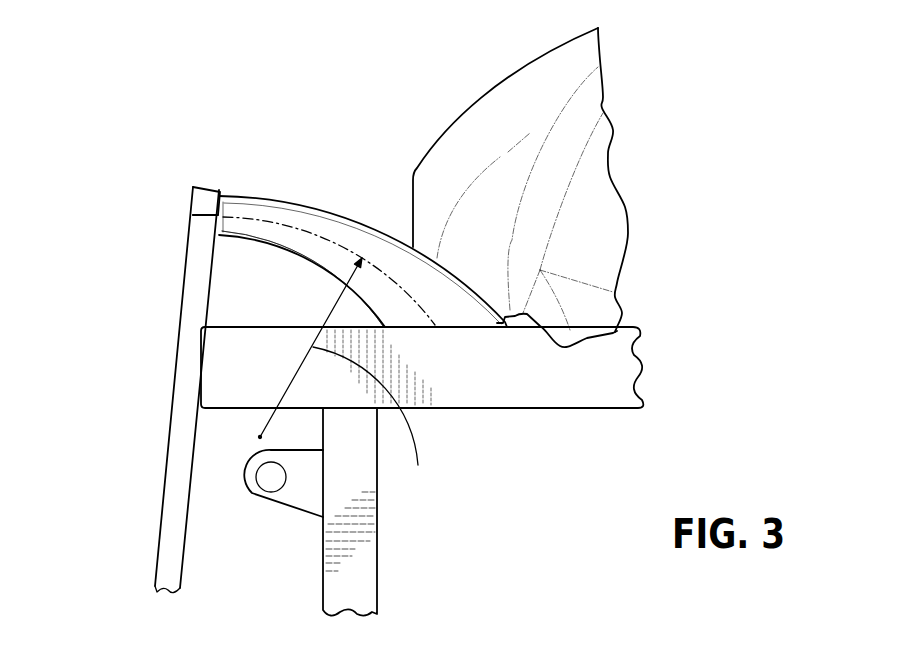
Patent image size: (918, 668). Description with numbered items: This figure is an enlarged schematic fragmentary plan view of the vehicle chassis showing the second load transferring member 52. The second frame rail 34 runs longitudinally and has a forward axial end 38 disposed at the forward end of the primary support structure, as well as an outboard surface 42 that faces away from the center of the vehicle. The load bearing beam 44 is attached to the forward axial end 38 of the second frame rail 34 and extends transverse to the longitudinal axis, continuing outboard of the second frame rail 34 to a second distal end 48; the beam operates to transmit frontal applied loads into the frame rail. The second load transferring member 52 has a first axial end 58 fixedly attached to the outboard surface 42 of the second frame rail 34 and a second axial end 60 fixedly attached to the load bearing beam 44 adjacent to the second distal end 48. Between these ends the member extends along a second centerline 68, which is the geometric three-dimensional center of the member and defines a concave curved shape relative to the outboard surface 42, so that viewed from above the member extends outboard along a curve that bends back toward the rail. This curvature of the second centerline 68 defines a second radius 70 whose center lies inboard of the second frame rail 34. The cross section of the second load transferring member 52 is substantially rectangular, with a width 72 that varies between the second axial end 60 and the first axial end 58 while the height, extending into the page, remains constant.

The second frame rail 34 is at (580, 400).
The forward axial end 38 is at (200, 370).
The outboard surface 42 is at (628, 325).
The load bearing beam 44 is at (153, 521).
The second distal end 48 is at (214, 189).
The second load transferring member 52 is at (303, 207).
The first axial end 58 is at (450, 330).
The second axial end 60 is at (192, 212).
The second centerline 68 is at (268, 224).
The second radius 70 is at (347, 376).
The width 72 is at (288, 255).